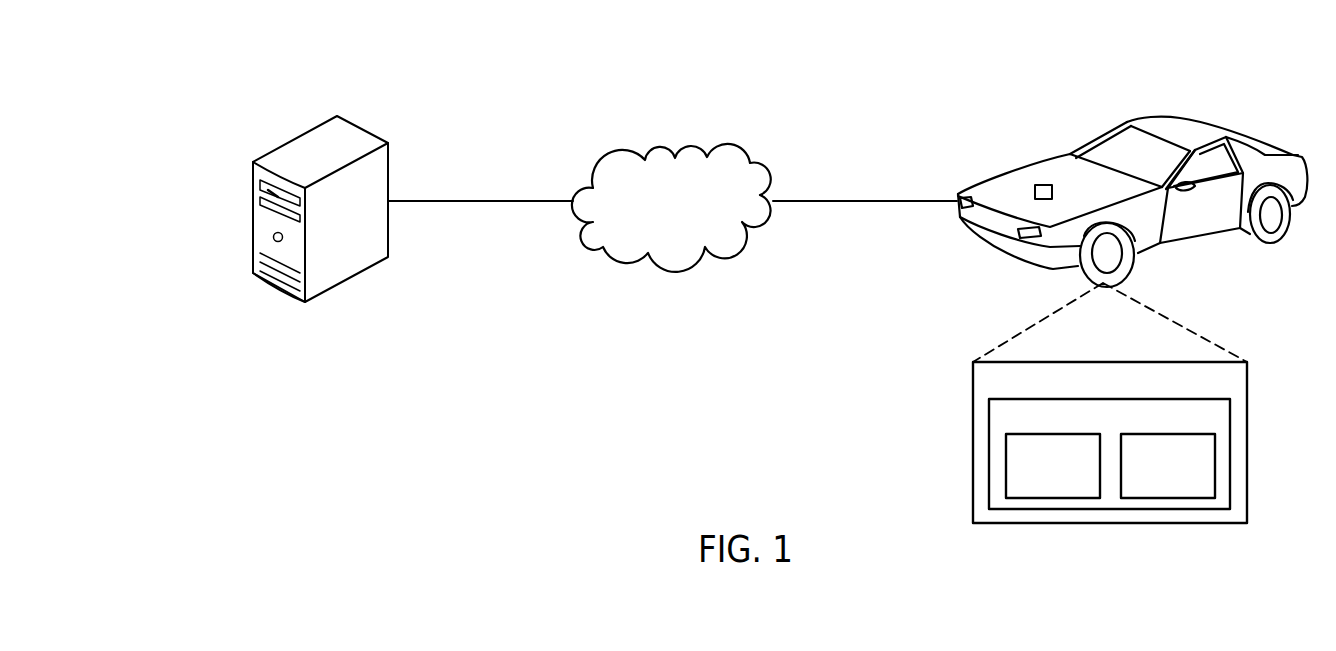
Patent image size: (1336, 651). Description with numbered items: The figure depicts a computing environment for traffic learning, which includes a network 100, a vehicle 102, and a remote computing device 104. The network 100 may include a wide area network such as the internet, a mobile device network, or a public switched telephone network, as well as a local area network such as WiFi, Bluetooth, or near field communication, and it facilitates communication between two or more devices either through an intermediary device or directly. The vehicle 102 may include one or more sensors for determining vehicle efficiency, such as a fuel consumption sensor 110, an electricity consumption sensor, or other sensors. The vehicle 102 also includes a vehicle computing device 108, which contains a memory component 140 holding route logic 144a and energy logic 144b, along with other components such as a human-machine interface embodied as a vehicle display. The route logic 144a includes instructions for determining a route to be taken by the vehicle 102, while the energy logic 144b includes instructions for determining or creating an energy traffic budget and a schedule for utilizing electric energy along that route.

The network 100 is at (732, 143).
The vehicle 102 is at (1160, 116).
The remote computing device 104 is at (390, 160).
The vehicle computing device 108 is at (1247, 380).
The fuel consumption sensor 110 is at (1041, 185).
The memory component 140 is at (1230, 432).
The route logic 144a is at (1006, 465).
The energy logic 144b is at (1215, 465).